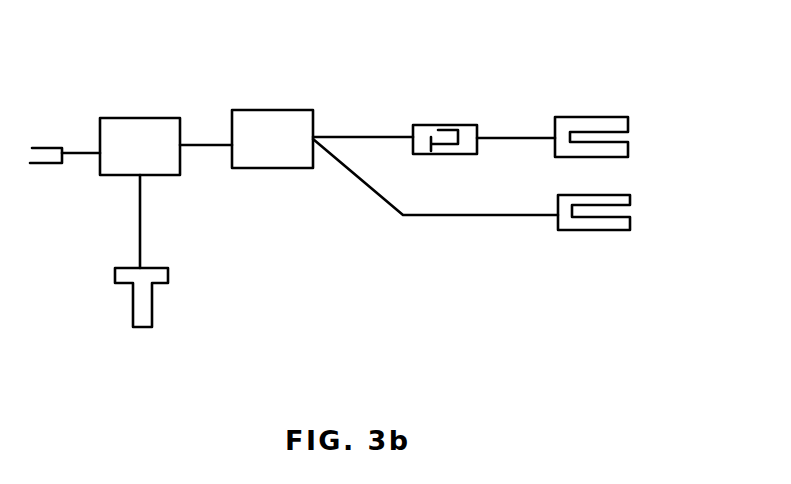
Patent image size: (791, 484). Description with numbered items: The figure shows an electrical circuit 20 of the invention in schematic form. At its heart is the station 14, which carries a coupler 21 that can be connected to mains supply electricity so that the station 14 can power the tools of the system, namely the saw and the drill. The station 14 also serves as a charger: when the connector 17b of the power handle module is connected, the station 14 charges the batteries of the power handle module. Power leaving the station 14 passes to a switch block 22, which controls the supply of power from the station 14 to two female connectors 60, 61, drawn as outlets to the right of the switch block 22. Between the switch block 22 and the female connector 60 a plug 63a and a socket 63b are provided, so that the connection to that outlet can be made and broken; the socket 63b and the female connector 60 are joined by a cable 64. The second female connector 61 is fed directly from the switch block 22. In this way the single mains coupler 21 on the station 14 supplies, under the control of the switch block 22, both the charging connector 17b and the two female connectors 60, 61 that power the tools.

The station 14 is at (123, 100).
The connector 17b is at (147, 305).
The electrical circuit 20 is at (493, 56).
The coupler 21 is at (45, 167).
The switch block 22 is at (263, 128).
The female connector 60 is at (628, 123).
The female connector 61 is at (630, 221).
The plug 63a is at (437, 90).
The socket 63b is at (457, 128).
The cable 64 is at (502, 140).